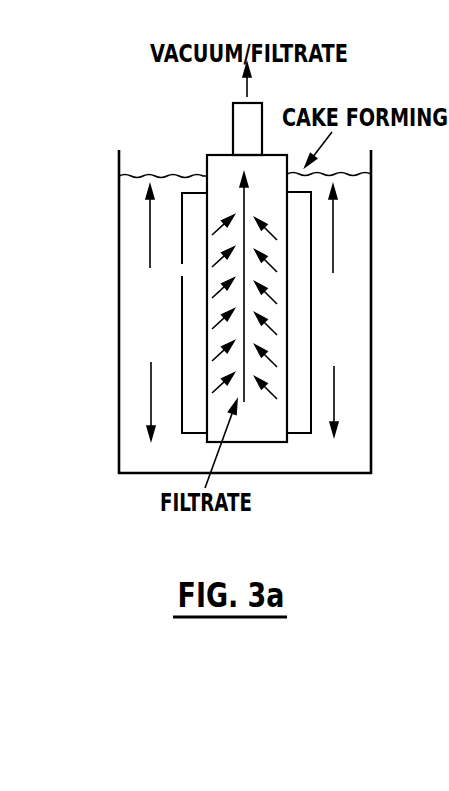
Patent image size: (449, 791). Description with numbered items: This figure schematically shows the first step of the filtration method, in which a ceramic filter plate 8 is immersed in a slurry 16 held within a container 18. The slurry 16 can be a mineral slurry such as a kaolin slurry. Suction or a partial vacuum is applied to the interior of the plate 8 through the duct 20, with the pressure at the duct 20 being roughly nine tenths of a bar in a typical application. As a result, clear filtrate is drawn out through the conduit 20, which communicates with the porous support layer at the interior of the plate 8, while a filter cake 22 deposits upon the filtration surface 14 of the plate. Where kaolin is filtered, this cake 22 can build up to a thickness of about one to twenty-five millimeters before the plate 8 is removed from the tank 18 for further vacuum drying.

The ceramic filter plate 8 is at (197, 146).
The filtration surface 14 is at (207, 184).
The slurry 16 is at (132, 318).
The container 18 is at (120, 392).
The duct 20 is at (233, 115).
The filter cake 22 is at (312, 220).